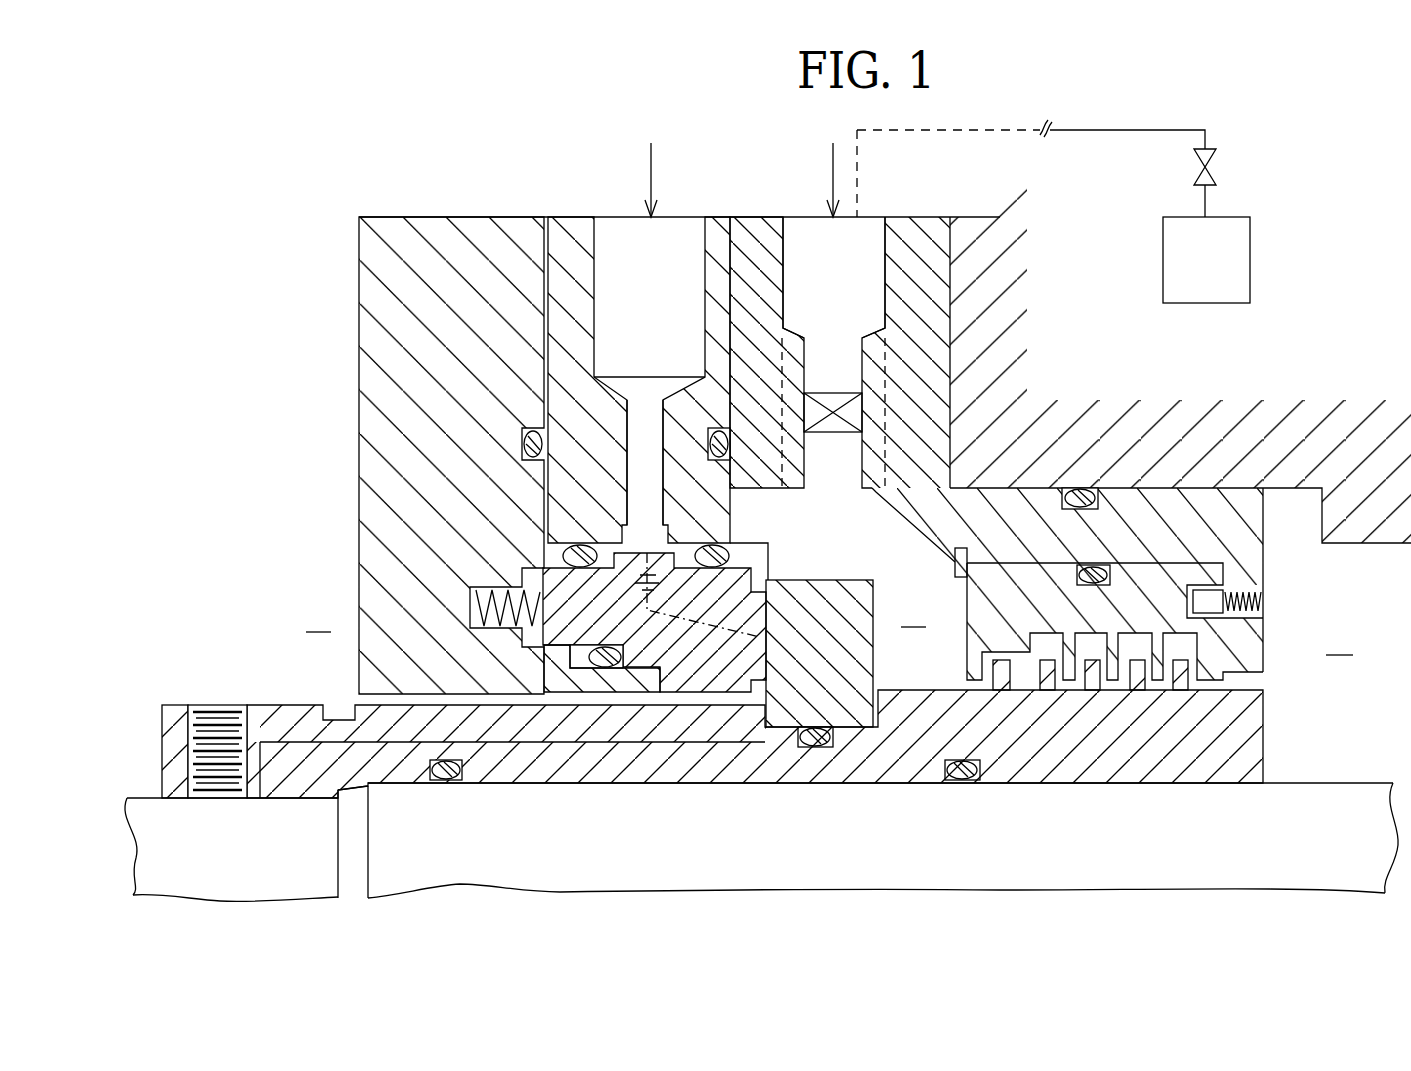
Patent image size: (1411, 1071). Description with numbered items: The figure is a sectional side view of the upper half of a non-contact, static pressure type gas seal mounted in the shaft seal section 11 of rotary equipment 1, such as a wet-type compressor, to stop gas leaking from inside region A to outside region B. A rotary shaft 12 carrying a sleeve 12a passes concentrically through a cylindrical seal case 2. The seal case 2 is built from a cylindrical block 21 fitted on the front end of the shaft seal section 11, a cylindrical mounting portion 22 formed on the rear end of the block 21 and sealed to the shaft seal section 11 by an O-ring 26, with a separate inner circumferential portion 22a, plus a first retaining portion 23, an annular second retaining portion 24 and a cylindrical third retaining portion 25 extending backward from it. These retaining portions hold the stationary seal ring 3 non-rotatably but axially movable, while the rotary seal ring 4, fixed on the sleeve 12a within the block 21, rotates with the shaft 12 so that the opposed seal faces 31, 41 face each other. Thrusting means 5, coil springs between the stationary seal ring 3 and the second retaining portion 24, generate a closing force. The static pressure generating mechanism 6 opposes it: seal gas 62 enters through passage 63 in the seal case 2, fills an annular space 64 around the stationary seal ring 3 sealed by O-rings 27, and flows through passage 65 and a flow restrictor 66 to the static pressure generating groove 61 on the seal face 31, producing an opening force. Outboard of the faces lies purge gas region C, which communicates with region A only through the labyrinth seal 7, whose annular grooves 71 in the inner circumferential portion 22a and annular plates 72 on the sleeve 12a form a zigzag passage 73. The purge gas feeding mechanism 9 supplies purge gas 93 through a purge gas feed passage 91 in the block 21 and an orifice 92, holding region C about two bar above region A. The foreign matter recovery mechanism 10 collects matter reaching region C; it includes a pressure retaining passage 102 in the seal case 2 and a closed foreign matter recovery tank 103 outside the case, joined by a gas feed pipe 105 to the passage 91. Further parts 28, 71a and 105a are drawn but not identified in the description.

The rotary equipment 1 is at (947, 210).
The seal case 2 is at (431, 206).
The stationary seal ring 3 is at (683, 640).
The rotary seal ring 4 is at (881, 694).
The thrusting means 5 is at (575, 694).
The static pressure generating mechanism 6 is at (670, 203).
The labyrinth seal 7 is at (955, 656).
The purge gas feeding mechanism 9 is at (827, 154).
The foreign matter recovery mechanism 10 is at (1262, 281).
The shaft seal section 11 is at (1283, 490).
The rotary shaft 12 is at (1343, 792).
The sleeve 12a is at (1250, 742).
The cylindrical block 21 is at (745, 252).
The cylindrical mounting portion 22 is at (1232, 500).
The inner circumferential portion 22a is at (1240, 622).
The first retaining portion 23 is at (567, 234).
The second retaining portion 24 is at (365, 463).
The third retaining portion 25 is at (578, 694).
The O-ring 26 is at (1097, 646).
The O-rings 27 is at (574, 540).
The O-ring 28 is at (582, 570).
The seal face 31 is at (832, 746).
The seal face 41 is at (747, 672).
The static pressure generating groove 61 is at (775, 600).
The seal gas 62 is at (640, 188).
The seal gas feed passage 63 is at (617, 243).
The annular space 64 is at (645, 540).
The seal gas feed passage 65 is at (690, 682).
The flow restrictor 66 is at (612, 672).
The annular grooves 71 is at (1188, 650).
The labyrinth teeth 71a is at (1046, 664).
The annular plates 72 is at (1075, 492).
The zigzag passage 73 is at (1137, 620).
The purge gas feed passage 91 is at (880, 272).
The orifice 92 is at (850, 412).
The purge gas 93 is at (832, 205).
The pressure retaining passage 102 is at (860, 455).
The foreign matter recovery tank 103 is at (1250, 255).
The gas feed pipe 105 is at (1008, 132).
The valve 105a is at (1217, 175).